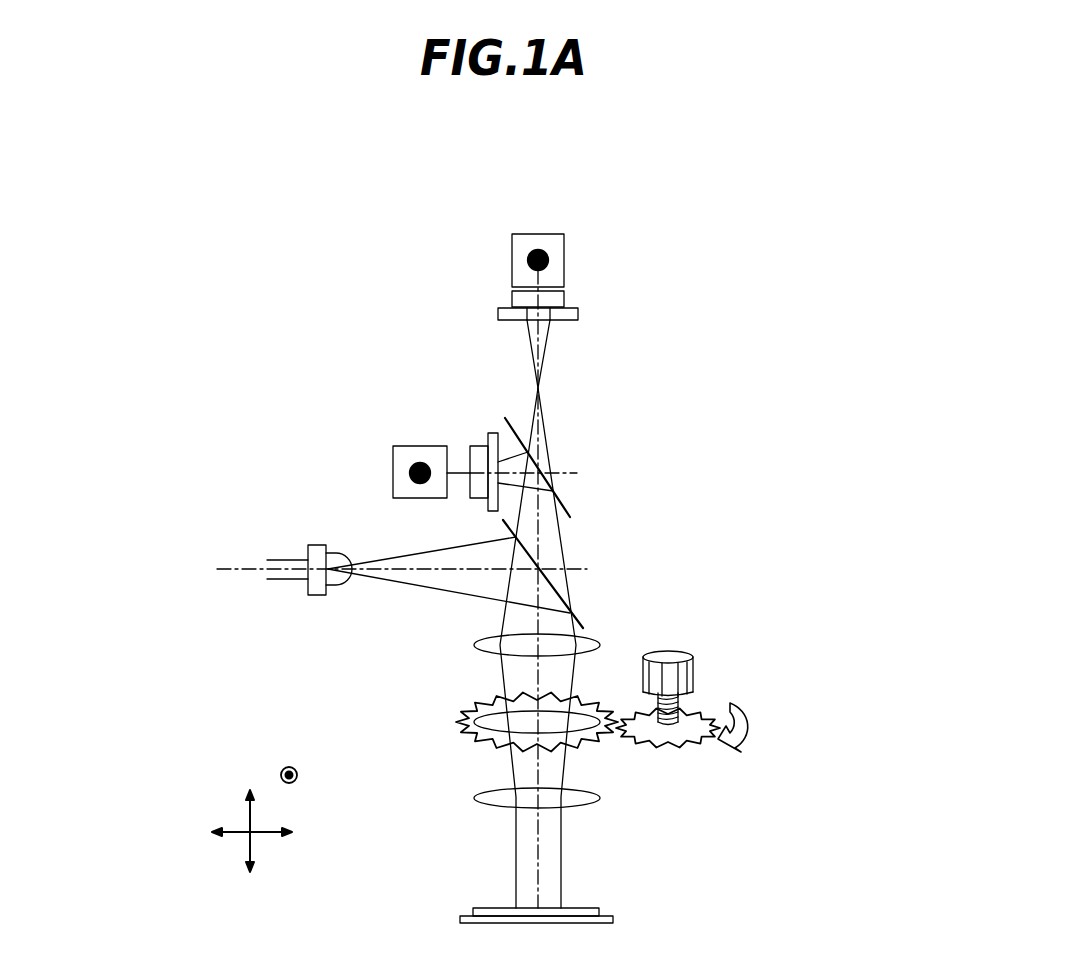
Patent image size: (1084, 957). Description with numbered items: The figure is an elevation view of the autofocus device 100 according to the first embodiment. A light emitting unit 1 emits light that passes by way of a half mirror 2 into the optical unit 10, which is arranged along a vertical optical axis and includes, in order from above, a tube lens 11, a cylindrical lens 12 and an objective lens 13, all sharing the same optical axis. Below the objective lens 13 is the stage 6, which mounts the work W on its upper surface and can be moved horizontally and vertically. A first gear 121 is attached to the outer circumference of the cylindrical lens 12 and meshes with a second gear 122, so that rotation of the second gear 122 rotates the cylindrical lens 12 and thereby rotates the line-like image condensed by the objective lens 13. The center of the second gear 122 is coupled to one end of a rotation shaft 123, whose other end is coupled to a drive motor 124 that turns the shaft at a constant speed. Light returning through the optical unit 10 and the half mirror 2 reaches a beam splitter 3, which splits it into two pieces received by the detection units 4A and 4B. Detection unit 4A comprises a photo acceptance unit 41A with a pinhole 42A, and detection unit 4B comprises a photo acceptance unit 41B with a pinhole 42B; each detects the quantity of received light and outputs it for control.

The autofocus device 100 is at (552, 174).
The light emitting unit 1 is at (318, 543).
The half mirror 2 is at (573, 620).
The beam splitter 3 is at (567, 503).
The detection unit 4A is at (487, 370).
The photo acceptance unit 41A is at (420, 445).
The pinhole 42A is at (493, 433).
The detection unit 4B is at (705, 225).
The photo acceptance unit 41B is at (565, 262).
The pinhole 42B is at (578, 317).
The optical unit 10 is at (404, 620).
The tube lens 11 is at (476, 643).
The cylindrical lens 12 is at (462, 715).
The objective lens 13 is at (476, 795).
The first gear 121 is at (592, 747).
The second gear 122 is at (690, 745).
The rotation shaft 123 is at (690, 700).
The drive motor 124 is at (680, 653).
The work W is at (478, 908).
The stage 6 is at (462, 917).